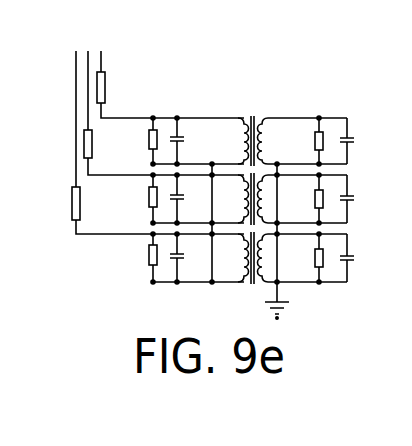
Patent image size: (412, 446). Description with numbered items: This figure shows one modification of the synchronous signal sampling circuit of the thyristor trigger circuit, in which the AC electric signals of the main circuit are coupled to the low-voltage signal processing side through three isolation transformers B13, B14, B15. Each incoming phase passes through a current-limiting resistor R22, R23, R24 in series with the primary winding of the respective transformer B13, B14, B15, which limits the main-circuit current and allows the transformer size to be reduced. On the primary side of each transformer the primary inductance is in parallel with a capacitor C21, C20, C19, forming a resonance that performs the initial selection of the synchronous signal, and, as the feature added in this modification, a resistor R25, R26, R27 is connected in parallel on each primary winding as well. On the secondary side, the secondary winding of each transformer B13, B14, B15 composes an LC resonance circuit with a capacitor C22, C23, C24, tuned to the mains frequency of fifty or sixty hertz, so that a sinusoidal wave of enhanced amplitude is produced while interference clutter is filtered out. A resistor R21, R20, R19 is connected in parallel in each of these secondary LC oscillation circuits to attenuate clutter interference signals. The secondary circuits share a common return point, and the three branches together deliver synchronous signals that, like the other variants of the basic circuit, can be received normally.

The current-limiting resistor R22 is at (170, 84).
The current-limiting resistor R23 is at (164, 113).
The current-limiting resistor R24 is at (158, 142).
The primary parallel resistor R25 is at (185, 141).
The primary parallel resistor R26 is at (185, 199).
The primary parallel resistor R27 is at (185, 258).
The primary resonance capacitor C21 is at (187, 141).
The primary resonance capacitor C20 is at (187, 199).
The primary resonance capacitor C19 is at (187, 258).
The transformer B13 is at (244, 141).
The transformer B14 is at (244, 199).
The transformer B15 is at (244, 258).
The secondary parallel resistor R21 is at (307, 141).
The secondary parallel resistor R20 is at (307, 199).
The secondary parallel resistor R19 is at (307, 258).
The secondary resonance capacitor C22 is at (361, 141).
The secondary resonance capacitor C23 is at (361, 199).
The secondary resonance capacitor C24 is at (361, 258).